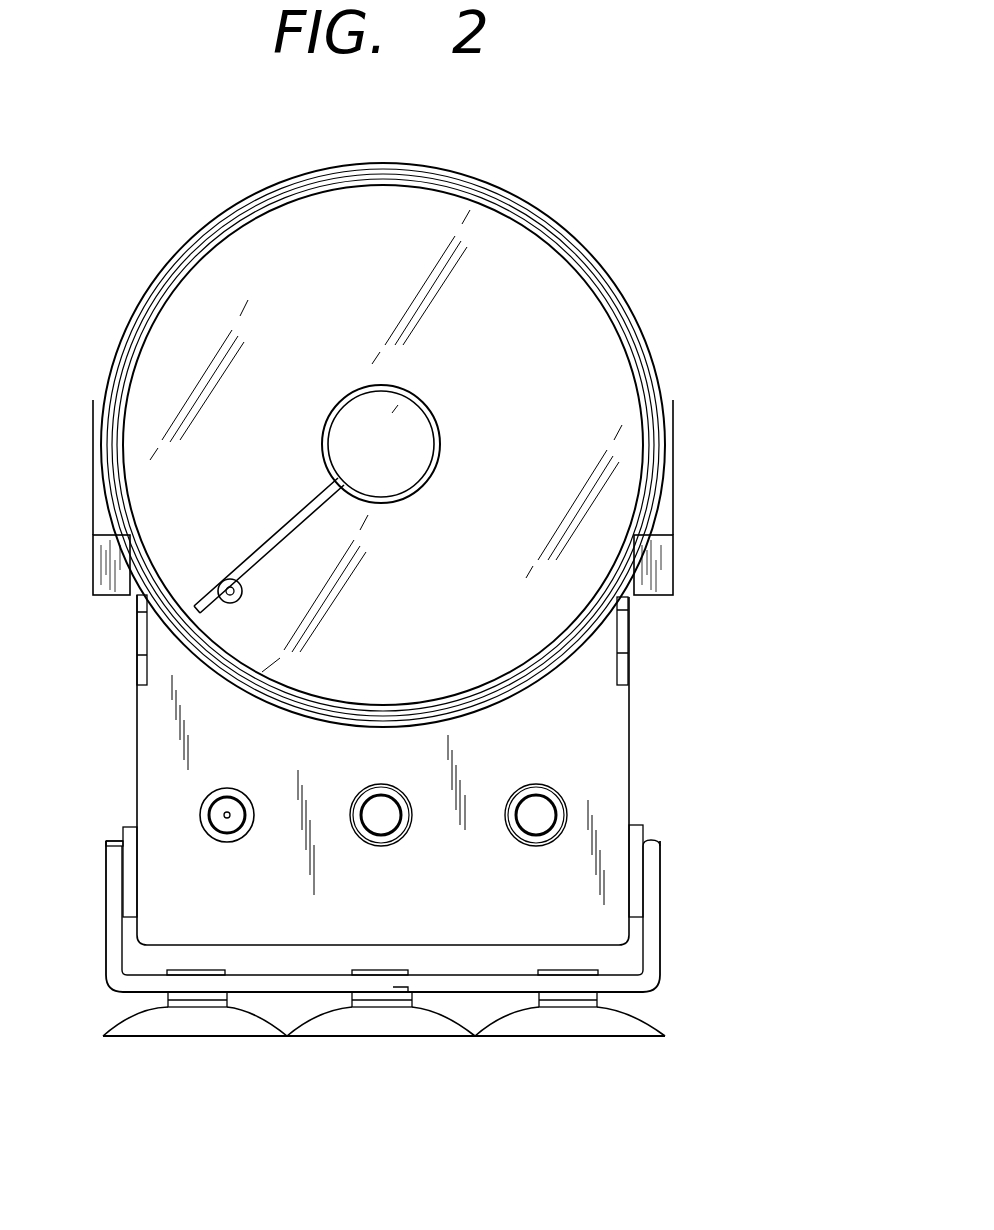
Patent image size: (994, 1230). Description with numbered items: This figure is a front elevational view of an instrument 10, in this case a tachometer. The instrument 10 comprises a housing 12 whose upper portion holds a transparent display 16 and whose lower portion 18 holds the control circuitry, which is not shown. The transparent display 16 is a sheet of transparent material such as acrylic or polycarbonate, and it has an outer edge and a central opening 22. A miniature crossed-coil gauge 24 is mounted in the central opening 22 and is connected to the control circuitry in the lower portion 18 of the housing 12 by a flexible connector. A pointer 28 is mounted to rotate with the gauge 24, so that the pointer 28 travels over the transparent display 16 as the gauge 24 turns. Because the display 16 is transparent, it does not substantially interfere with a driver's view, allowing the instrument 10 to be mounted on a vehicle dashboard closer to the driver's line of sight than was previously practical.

The instrument 10 is at (735, 508).
The housing 12 is at (632, 600).
The transparent display 16 is at (456, 612).
The lower portion 18 is at (631, 752).
The central opening 22 is at (338, 400).
The miniature crossed-coil gauge 24 is at (405, 405).
The pointer 28 is at (262, 548).